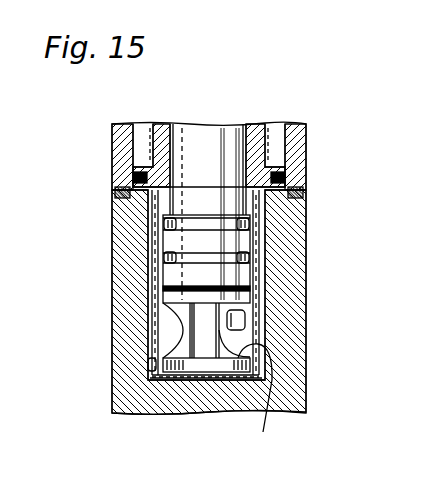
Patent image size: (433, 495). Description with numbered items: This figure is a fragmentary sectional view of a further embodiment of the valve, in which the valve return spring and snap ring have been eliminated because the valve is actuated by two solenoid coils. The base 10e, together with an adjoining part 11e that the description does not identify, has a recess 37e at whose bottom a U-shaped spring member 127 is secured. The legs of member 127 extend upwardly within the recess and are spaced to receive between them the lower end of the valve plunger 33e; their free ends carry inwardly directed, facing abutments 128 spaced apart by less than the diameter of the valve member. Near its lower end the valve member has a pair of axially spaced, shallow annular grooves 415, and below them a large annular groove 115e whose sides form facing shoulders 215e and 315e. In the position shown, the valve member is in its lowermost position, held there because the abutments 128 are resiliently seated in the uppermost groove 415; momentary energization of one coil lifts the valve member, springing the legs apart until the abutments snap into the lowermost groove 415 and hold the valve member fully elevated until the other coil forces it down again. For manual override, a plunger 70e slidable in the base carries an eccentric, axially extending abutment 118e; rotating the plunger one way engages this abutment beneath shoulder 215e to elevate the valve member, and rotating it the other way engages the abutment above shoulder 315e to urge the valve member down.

The base 10e is at (150, 414).
The upper cap 11e is at (311, 150).
The valve plunger 33e is at (191, 138).
The annular grooves 415 is at (190, 258).
The abutments 128 is at (166, 223).
The valve member shoulder 215e is at (172, 313).
The U-shaped spring member 127 is at (178, 333).
The plunger 70e is at (148, 343).
The abutment 118e is at (238, 320).
The annular groove 115e is at (247, 335).
The recess 37e is at (148, 357).
The valve member shoulder 315e is at (267, 398).